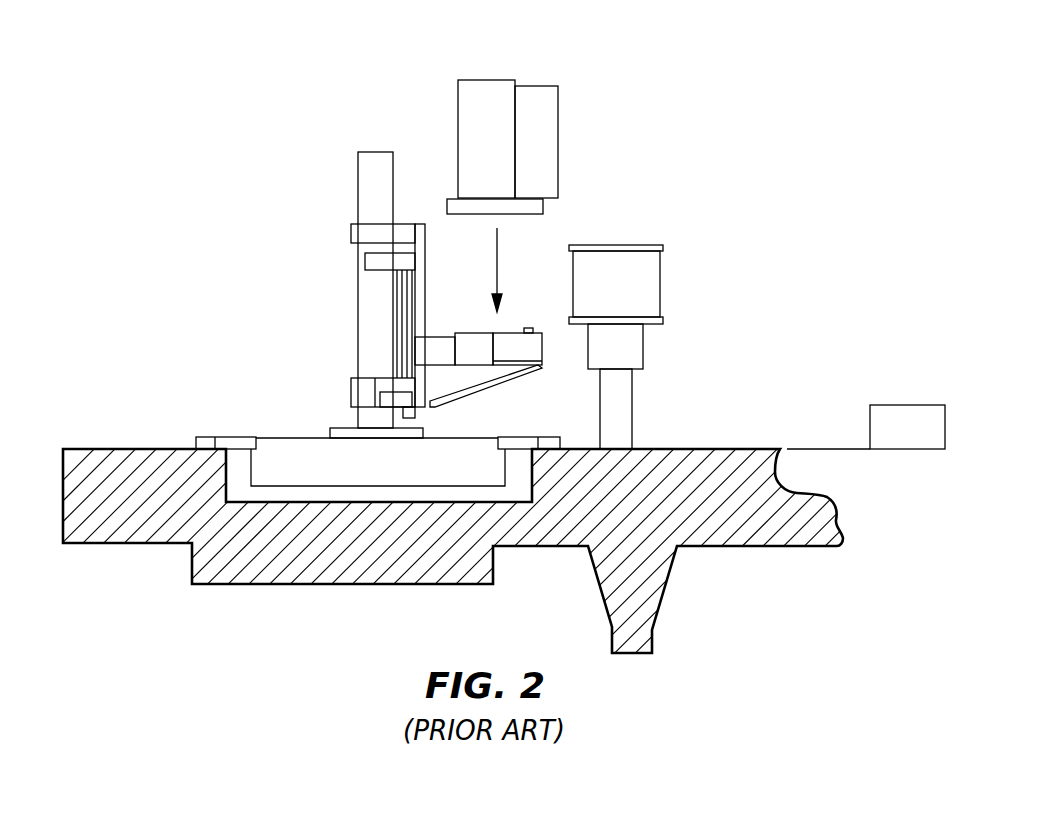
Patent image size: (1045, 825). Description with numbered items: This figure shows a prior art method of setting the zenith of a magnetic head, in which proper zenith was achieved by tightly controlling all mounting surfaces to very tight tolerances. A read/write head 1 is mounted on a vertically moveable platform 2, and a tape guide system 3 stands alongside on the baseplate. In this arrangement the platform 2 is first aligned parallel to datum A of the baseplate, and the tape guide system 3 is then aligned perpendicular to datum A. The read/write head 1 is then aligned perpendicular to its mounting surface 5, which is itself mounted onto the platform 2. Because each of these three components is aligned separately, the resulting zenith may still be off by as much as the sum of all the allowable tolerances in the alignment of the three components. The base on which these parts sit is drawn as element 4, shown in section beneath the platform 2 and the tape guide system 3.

The read/write head 1 is at (540, 96).
The vertically moveable platform 2 is at (497, 333).
The tape guide system 3 is at (647, 276).
The base table 4 is at (765, 490).
The mounting surface 5 is at (447, 200).